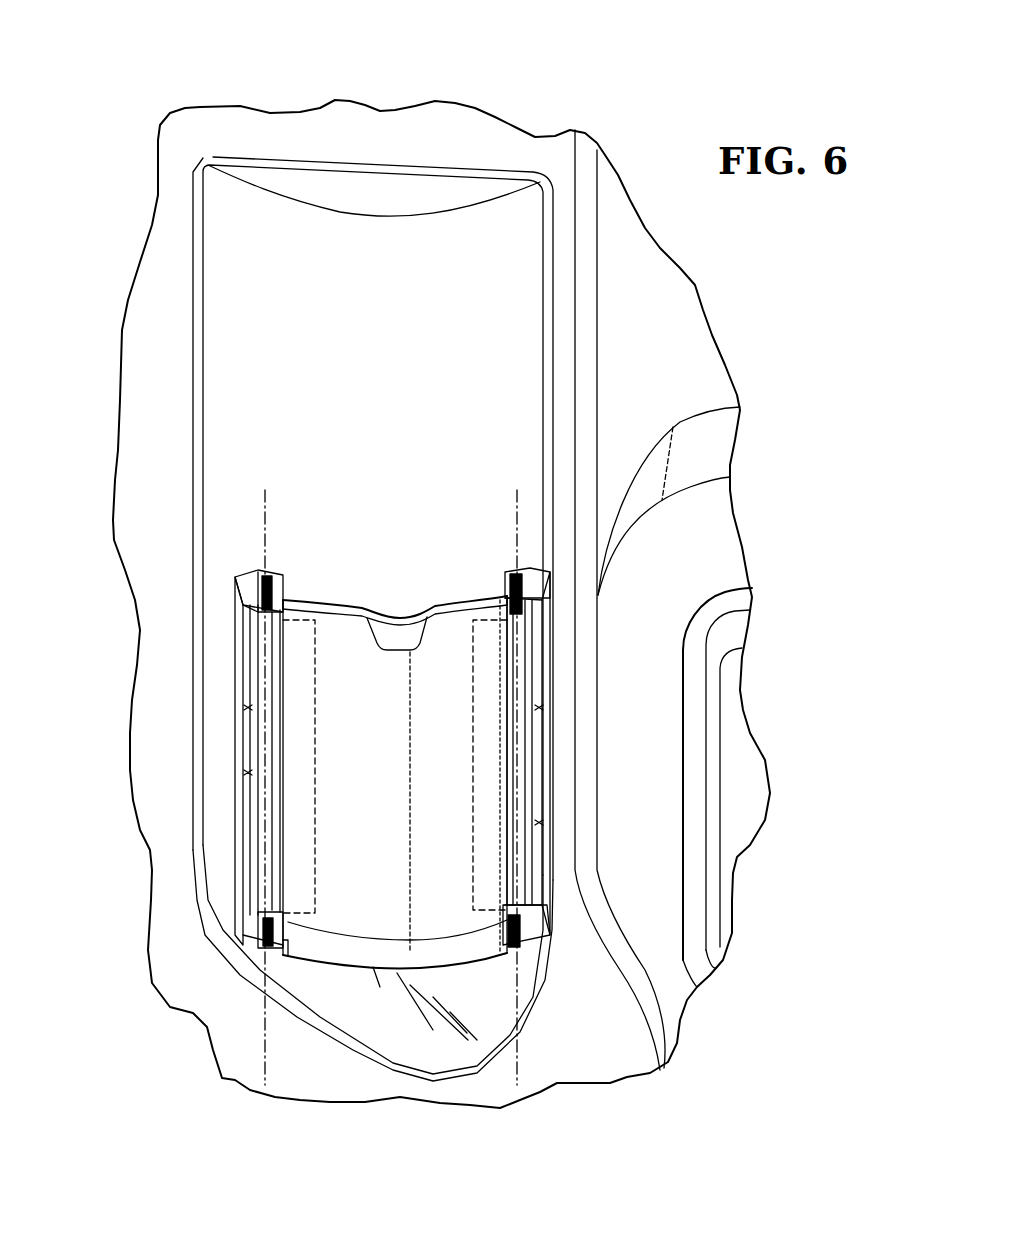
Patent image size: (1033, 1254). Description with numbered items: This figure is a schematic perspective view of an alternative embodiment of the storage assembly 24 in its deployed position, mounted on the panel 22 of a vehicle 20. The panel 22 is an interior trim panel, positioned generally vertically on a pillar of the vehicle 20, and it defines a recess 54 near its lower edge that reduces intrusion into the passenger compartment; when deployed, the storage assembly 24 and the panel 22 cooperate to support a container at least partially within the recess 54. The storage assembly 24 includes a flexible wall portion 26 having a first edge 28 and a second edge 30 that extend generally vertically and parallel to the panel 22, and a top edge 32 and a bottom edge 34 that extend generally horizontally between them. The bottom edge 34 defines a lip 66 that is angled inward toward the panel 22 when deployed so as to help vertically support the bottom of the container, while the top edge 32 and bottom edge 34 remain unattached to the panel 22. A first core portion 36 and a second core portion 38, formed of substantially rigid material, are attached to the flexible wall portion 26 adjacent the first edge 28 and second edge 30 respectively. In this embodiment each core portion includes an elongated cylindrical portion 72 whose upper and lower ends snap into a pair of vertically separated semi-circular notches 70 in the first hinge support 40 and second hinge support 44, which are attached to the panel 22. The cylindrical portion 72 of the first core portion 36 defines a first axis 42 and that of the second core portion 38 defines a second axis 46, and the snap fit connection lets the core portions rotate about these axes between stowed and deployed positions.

The vehicle 20 is at (618, 92).
The panel 22 is at (188, 125).
The storage assembly 24 is at (459, 594).
The flexible wall portion 26 is at (356, 636).
The first edge 28 is at (255, 860).
The second edge 30 is at (538, 657).
The top edge 32 is at (340, 604).
The bottom edge 34 is at (455, 948).
The first core portion 36 is at (315, 660).
The second core portion 38 is at (473, 758).
The first hinge support 40 is at (267, 570).
The first axis 42 is at (275, 1037).
The second hinge support 44 is at (515, 562).
The second axis 46 is at (513, 1038).
The recess 54 is at (230, 293).
The lip 66 is at (450, 950).
The semi-circular notches 70 is at (262, 572).
The elongated cylindrical portion 72 is at (272, 574).